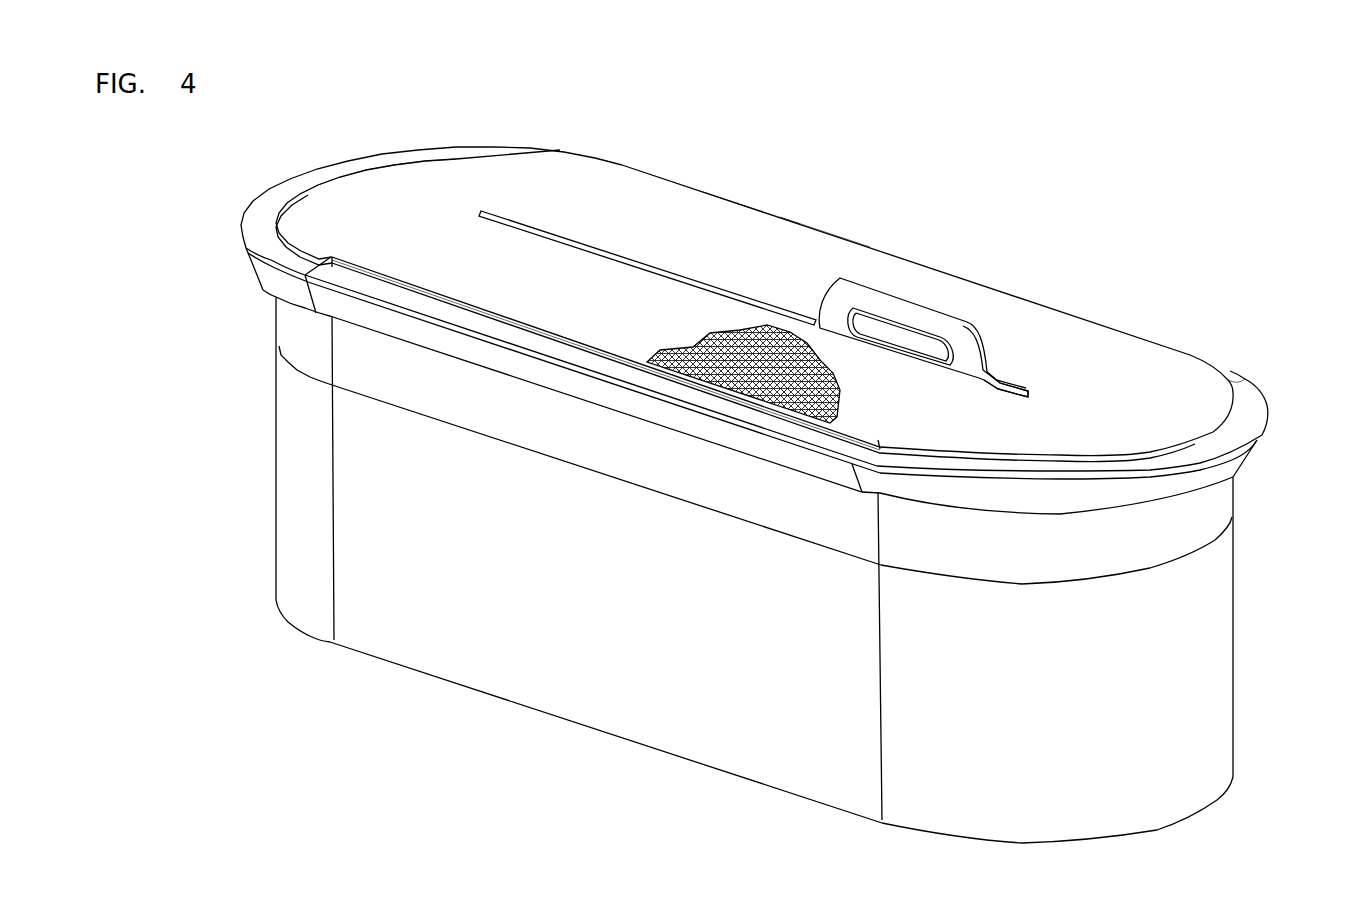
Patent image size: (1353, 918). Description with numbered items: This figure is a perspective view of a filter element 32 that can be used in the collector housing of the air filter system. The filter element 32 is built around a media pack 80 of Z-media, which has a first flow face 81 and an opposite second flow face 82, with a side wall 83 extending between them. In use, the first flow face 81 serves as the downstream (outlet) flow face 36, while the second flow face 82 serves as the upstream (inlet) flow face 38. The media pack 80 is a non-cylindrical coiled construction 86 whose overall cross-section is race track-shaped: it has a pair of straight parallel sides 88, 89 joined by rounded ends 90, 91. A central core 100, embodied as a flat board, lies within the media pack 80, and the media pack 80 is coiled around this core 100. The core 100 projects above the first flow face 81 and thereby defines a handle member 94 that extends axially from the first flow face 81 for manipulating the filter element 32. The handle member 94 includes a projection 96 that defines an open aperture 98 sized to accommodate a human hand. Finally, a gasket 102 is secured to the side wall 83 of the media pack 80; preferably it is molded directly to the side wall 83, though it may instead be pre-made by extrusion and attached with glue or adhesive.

The filter element 32 is at (1181, 199).
The downstream (outlet) flow face 36 is at (1070, 330).
The upstream (inlet) flow face 38 is at (773, 790).
The media pack 80 is at (693, 202).
The first flow face 81 is at (753, 223).
The second flow face 82 is at (607, 728).
The side wall 83 is at (1235, 662).
The coiled construction 86 is at (536, 172).
The straight parallel side 88 is at (812, 243).
The straight parallel side 89 is at (530, 320).
The rounded end 90 is at (317, 173).
The rounded end 91 is at (1240, 378).
The handle member 94 is at (878, 297).
The projection 96 is at (917, 308).
The open aperture 98 is at (923, 345).
The central core 100 is at (587, 245).
The gasket 102 is at (1224, 365).